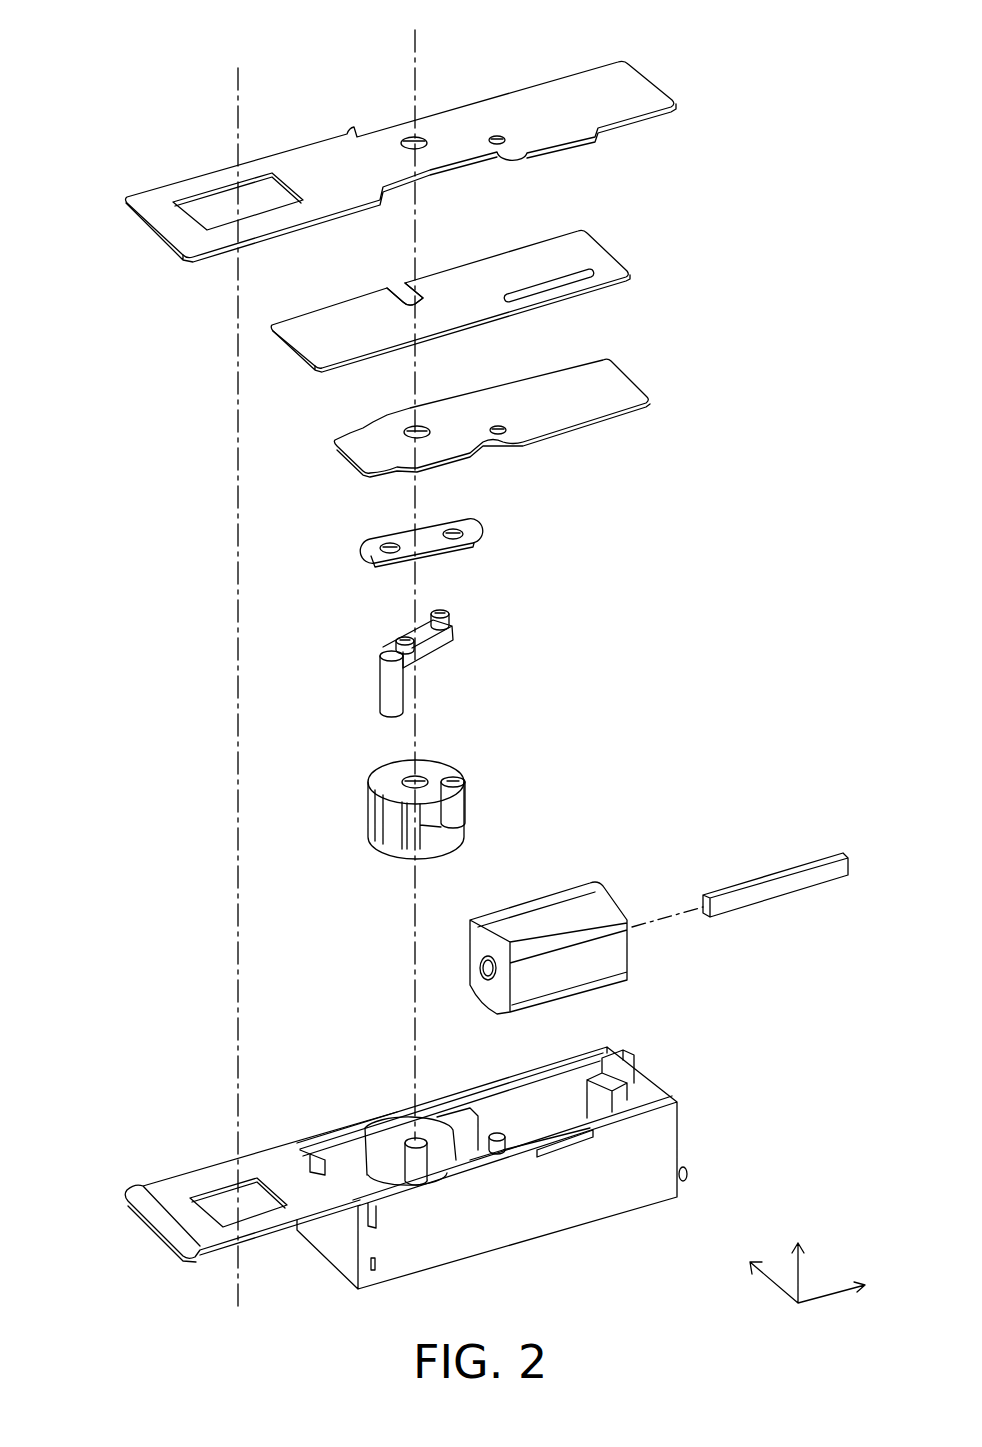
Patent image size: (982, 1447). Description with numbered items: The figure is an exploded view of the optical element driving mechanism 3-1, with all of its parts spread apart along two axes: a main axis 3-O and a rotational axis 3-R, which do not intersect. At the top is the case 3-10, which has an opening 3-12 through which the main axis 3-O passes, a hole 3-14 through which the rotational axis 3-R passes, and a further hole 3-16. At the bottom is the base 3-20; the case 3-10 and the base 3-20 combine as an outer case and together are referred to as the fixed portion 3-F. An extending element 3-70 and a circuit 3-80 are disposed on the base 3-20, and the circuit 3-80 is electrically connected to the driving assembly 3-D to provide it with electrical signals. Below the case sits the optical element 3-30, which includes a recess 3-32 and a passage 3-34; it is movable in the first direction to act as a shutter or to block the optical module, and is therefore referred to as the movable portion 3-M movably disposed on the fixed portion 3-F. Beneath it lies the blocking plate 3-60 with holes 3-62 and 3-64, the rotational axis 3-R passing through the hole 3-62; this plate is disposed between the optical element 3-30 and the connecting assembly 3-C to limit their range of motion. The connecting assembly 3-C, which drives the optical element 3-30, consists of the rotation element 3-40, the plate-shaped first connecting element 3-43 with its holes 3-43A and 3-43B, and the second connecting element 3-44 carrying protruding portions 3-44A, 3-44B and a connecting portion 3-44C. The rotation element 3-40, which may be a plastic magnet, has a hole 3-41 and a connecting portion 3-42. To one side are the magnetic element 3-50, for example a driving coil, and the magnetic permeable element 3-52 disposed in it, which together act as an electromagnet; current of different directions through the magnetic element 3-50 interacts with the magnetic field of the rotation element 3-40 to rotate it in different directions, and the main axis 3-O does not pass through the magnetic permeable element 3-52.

The optical element driving mechanism 3-1 is at (128, 42).
The main axis 3-O is at (234, 678).
The rotational axis 3-R is at (412, 573).
The case 3-10 is at (429, 151).
The opening 3-12 is at (205, 205).
The hole 3-14 is at (410, 137).
The hole 3-16 is at (497, 135).
The base 3-20 is at (538, 1168).
The optical element 3-30 is at (479, 290).
The recess 3-32 is at (405, 298).
The passage 3-34 is at (590, 275).
The rotation element 3-40 is at (415, 799).
The hole 3-41 is at (412, 778).
The connecting portion 3-42 is at (455, 777).
The first connecting element 3-43 is at (418, 532).
The hole 3-43A is at (455, 530).
The hole 3-43B is at (390, 544).
The second connecting element 3-44 is at (414, 645).
The protruding portion 3-44A is at (440, 610).
The protruding portion 3-44B is at (404, 636).
The connecting portion 3-44C is at (386, 698).
The magnetic element 3-50 is at (600, 905).
The magnetic permeable element 3-52 is at (728, 893).
The blocking plate 3-60 is at (507, 411).
The hole 3-62 is at (412, 430).
The hole 3-64 is at (498, 427).
The extending element 3-70 is at (143, 1195).
The circuit 3-80 is at (686, 1170).
The movable portion 3-M is at (815, 428).
The connecting assembly 3-C is at (815, 515).
The fixed portion 3-F is at (815, 631).
The driving assembly 3-D is at (715, 806).